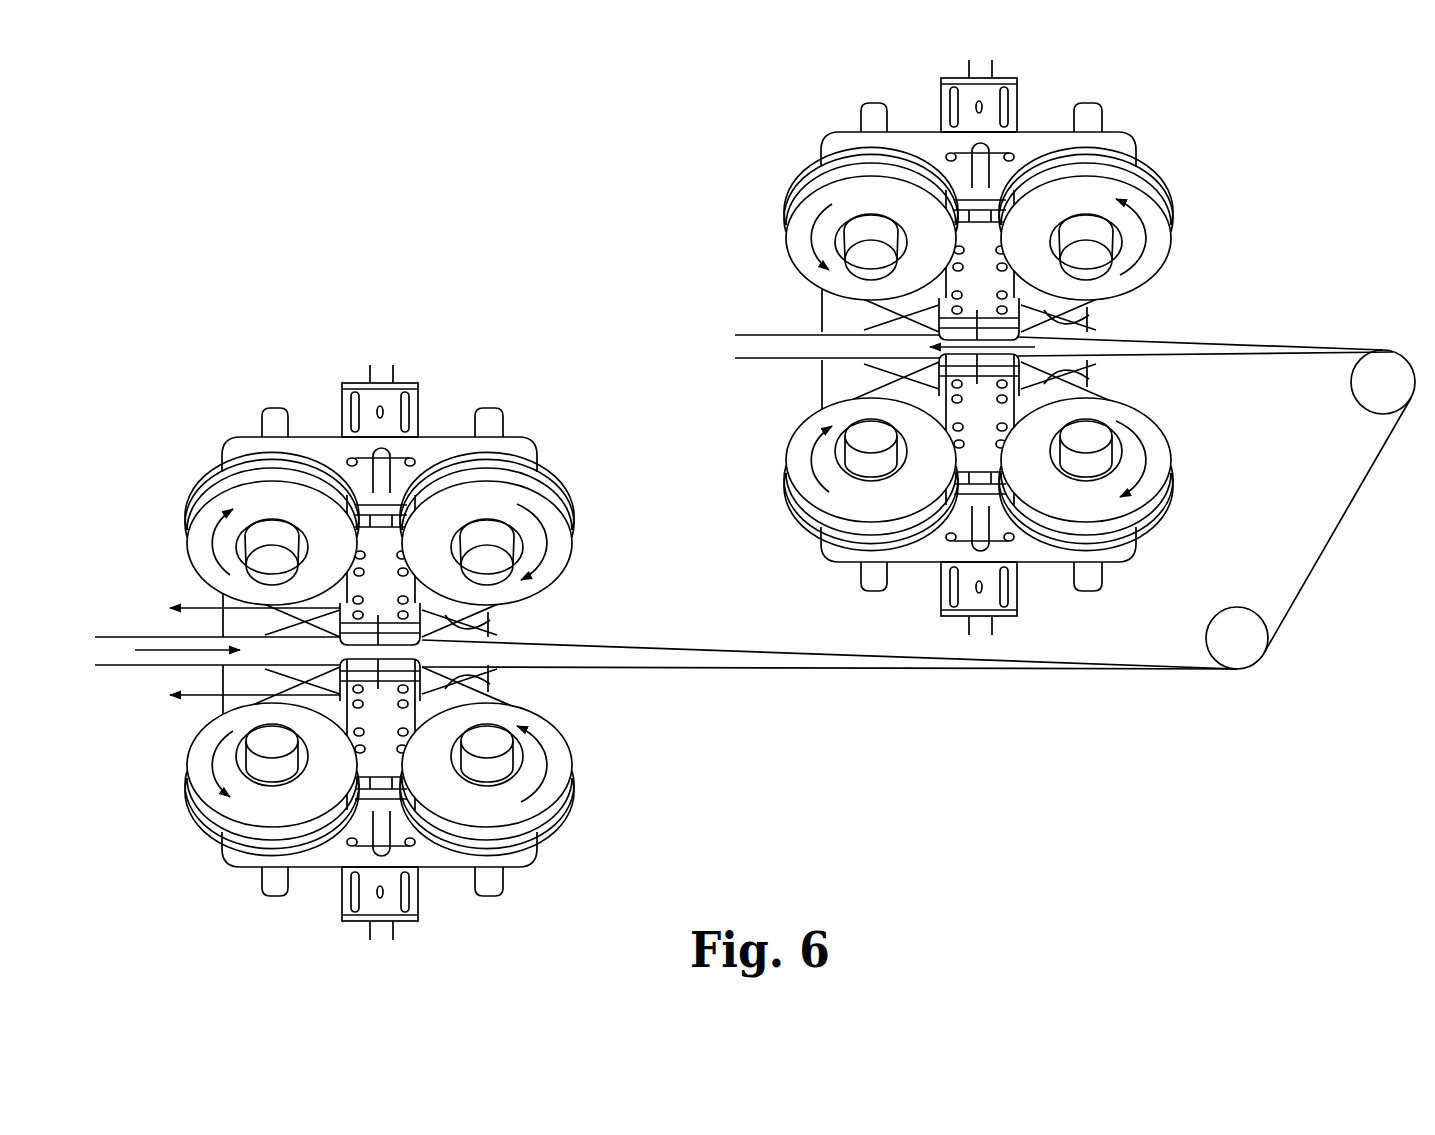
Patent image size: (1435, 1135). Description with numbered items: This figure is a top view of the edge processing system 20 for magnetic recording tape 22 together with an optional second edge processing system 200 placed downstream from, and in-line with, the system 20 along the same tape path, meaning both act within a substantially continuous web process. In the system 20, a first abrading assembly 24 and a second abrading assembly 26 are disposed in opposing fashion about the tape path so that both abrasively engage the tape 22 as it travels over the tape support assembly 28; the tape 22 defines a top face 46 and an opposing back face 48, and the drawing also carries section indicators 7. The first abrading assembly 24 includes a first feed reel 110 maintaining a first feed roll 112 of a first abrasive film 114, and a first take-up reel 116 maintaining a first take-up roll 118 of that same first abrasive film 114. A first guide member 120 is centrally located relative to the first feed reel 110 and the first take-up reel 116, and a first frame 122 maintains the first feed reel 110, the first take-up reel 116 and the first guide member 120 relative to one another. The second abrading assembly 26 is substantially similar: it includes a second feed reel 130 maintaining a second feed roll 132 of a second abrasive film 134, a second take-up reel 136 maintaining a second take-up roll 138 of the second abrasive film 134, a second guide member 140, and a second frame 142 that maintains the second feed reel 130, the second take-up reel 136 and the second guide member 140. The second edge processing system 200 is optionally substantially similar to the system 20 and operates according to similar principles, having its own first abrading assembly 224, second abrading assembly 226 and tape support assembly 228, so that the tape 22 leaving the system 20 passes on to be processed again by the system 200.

The edge processing system 20 is at (168, 356).
The magnetic recording tape 22 is at (723, 670).
The first abrading assembly 24 is at (568, 462).
The second abrading assembly 26 is at (590, 815).
The tape support assembly 28 is at (203, 676).
The top face 46 is at (647, 650).
The back face 48 is at (746, 333).
The section line 7- 7 is at (243, 652).
The first feed reel 110 is at (605, 505).
The first feed roll 112 is at (523, 585).
The first abrasive film 114 is at (462, 625).
The first take-up reel 116 is at (185, 482).
The first take-up roll 118 is at (198, 553).
The first guide member 120 is at (385, 612).
The first frame 122 is at (326, 418).
The second feed reel 130 is at (597, 787).
The second feed roll 132 is at (575, 745).
The second abrasive film 134 is at (475, 683).
The second take-up reel 136 is at (172, 793).
The second take-up roll 138 is at (205, 812).
The second guide member 140 is at (388, 695).
The second frame 142 is at (440, 875).
The second edge processing system 200 is at (762, 112).
The first abrading assembly 224 is at (1165, 128).
The second abrading assembly 226 is at (1185, 500).
The tape support assembly 228 is at (795, 385).